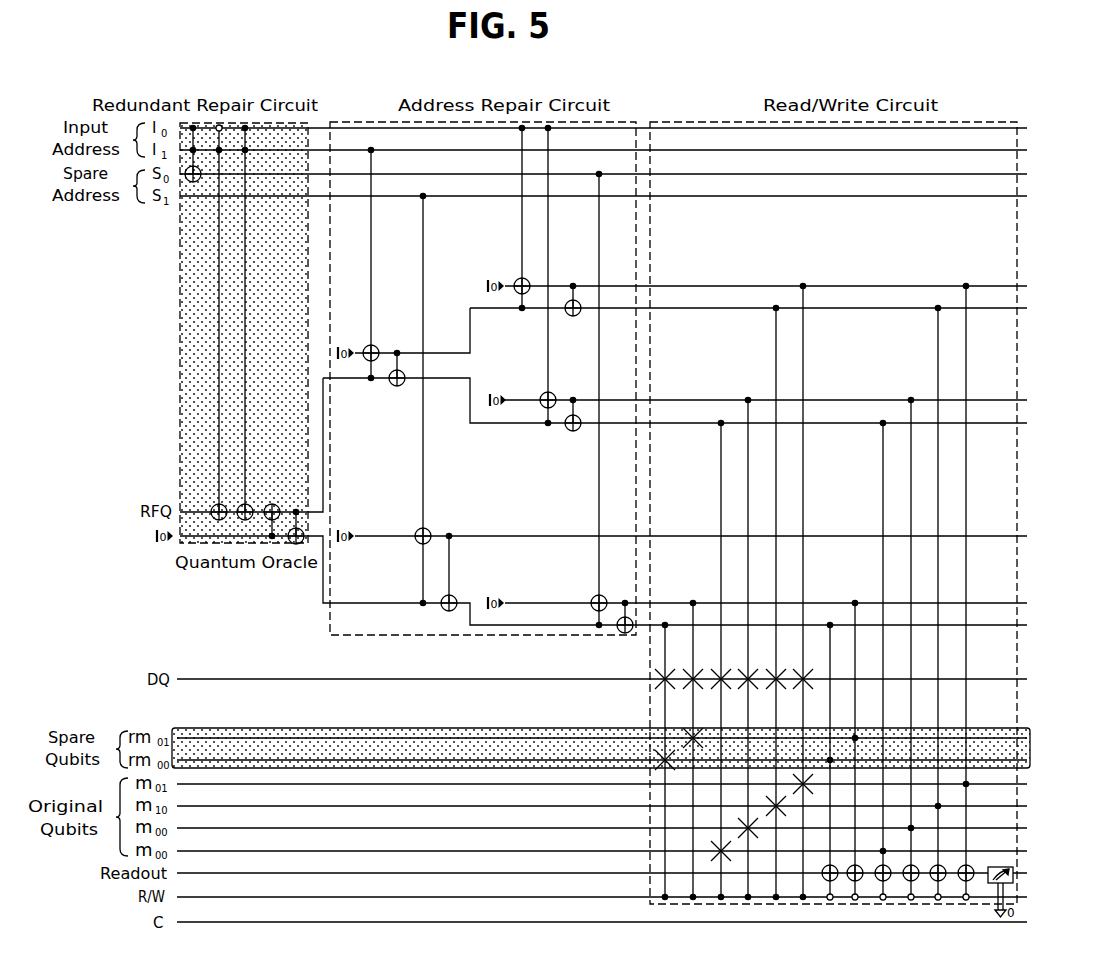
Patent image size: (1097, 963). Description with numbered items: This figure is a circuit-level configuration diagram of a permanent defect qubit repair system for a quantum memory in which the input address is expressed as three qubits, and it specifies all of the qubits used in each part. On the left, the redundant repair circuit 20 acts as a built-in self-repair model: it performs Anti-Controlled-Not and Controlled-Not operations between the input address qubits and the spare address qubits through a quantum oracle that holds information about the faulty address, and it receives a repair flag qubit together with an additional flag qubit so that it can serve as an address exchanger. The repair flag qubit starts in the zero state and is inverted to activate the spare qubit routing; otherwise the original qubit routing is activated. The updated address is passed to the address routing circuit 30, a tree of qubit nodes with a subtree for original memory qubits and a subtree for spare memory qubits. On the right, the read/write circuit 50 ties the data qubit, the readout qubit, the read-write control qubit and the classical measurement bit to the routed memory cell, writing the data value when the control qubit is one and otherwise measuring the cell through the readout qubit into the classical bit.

The redundant repair circuit 20 is at (280, 122).
The address routing circuit 30 is at (383, 122).
The read/write circuit 50 is at (745, 122).